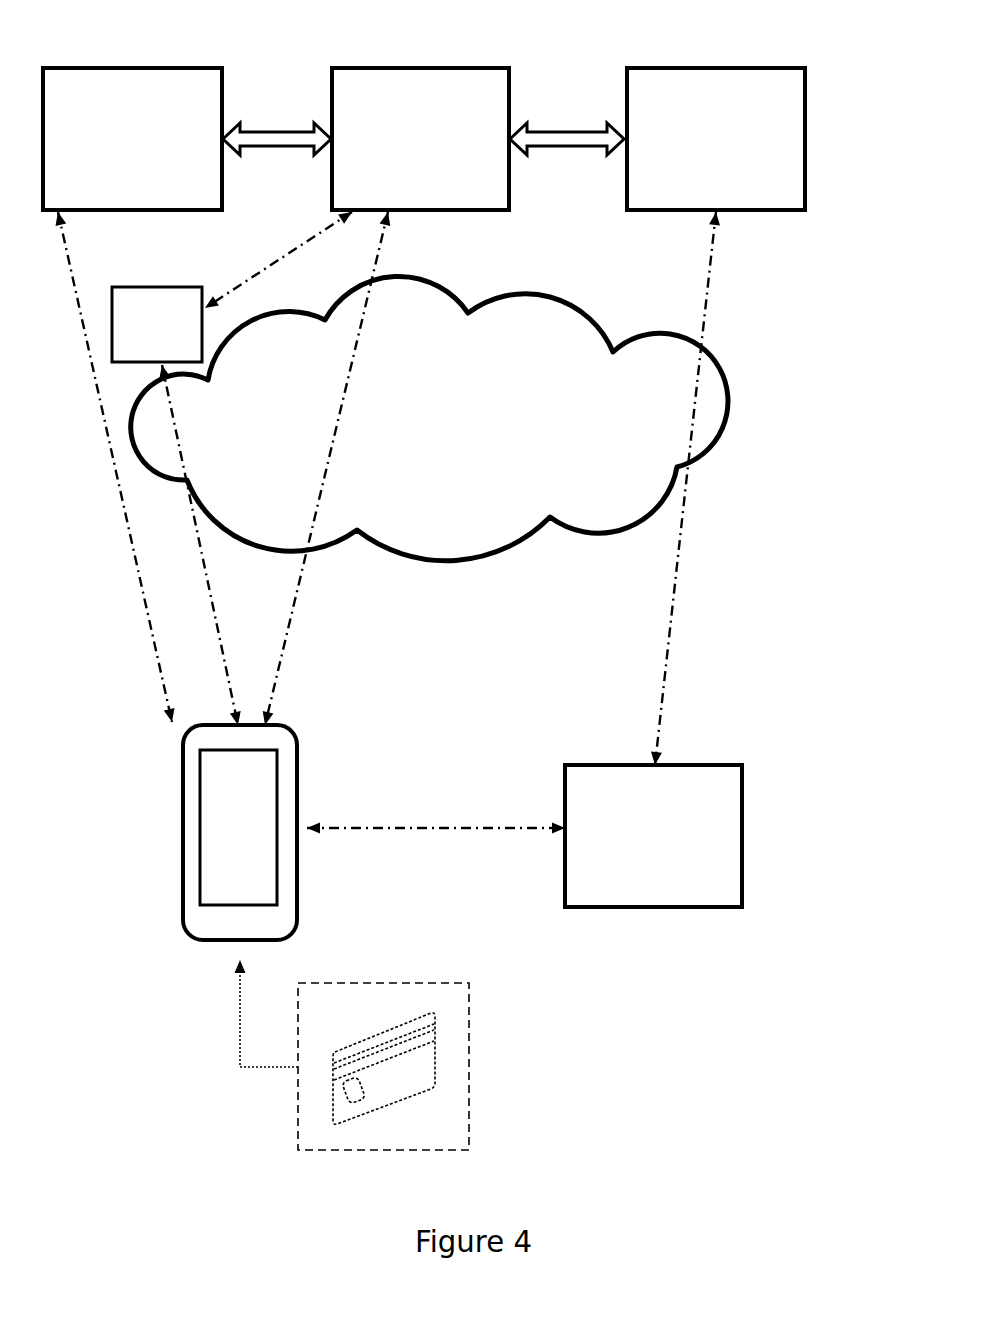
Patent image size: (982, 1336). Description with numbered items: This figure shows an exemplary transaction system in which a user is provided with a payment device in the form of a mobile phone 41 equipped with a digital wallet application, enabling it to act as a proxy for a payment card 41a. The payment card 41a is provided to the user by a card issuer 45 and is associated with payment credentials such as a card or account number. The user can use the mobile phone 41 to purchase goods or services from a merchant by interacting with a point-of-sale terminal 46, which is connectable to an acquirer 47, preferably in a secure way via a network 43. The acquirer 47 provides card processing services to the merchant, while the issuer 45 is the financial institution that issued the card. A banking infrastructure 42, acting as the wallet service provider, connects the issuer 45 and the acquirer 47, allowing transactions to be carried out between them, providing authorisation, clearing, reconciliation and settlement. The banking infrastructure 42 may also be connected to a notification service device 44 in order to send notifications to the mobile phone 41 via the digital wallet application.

The card issuer 45 is at (143, 68).
The banking infrastructure 42 is at (430, 68).
The acquirer 47 is at (725, 68).
The notification service device 44 is at (113, 287).
The network 43 is at (445, 560).
The mobile phone 41 is at (183, 776).
The point-of-sale terminal 46 is at (742, 820).
The payment card 41a is at (472, 1003).